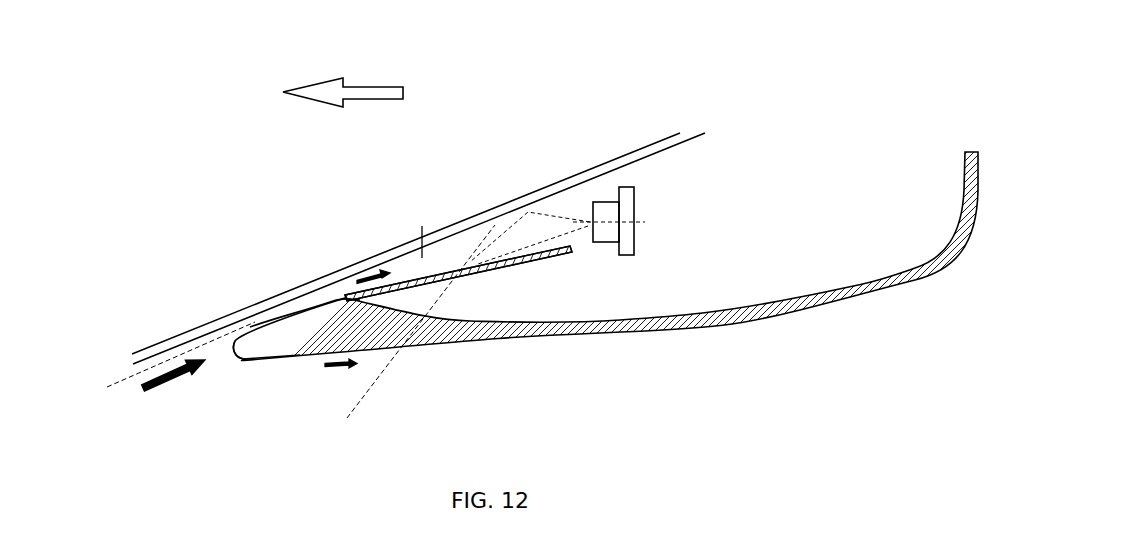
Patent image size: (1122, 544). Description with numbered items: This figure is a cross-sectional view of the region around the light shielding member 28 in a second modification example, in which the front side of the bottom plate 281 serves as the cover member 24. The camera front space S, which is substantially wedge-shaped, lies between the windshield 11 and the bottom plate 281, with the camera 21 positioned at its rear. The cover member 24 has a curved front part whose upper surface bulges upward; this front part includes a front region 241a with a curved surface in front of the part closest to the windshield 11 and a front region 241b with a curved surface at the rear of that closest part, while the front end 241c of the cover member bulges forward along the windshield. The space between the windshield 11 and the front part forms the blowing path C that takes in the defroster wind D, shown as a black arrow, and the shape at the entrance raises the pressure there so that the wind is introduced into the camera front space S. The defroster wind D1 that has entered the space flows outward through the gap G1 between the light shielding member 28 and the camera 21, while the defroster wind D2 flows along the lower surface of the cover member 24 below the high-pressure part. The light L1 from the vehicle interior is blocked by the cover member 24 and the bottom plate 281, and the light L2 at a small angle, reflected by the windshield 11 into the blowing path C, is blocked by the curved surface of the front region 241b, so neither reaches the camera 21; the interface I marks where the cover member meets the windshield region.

The windshield 11 is at (587, 170).
The camera 21 is at (636, 217).
The cover member 24 is at (470, 343).
The front region 241a is at (228, 311).
The front region 241b is at (290, 300).
The front lower edge of fin 241c is at (234, 351).
The light shielding member 28 is at (443, 280).
The bottom plate 281 is at (458, 273).
The camera front space S is at (423, 237).
The blowing path C is at (267, 300).
The interface I is at (190, 343).
The light L1 is at (411, 335).
The light L2 is at (164, 360).
The gap G1 is at (583, 247).
The defroster wind D is at (173, 382).
The defroster wind D1 is at (358, 249).
The defroster wind D2 is at (340, 376).